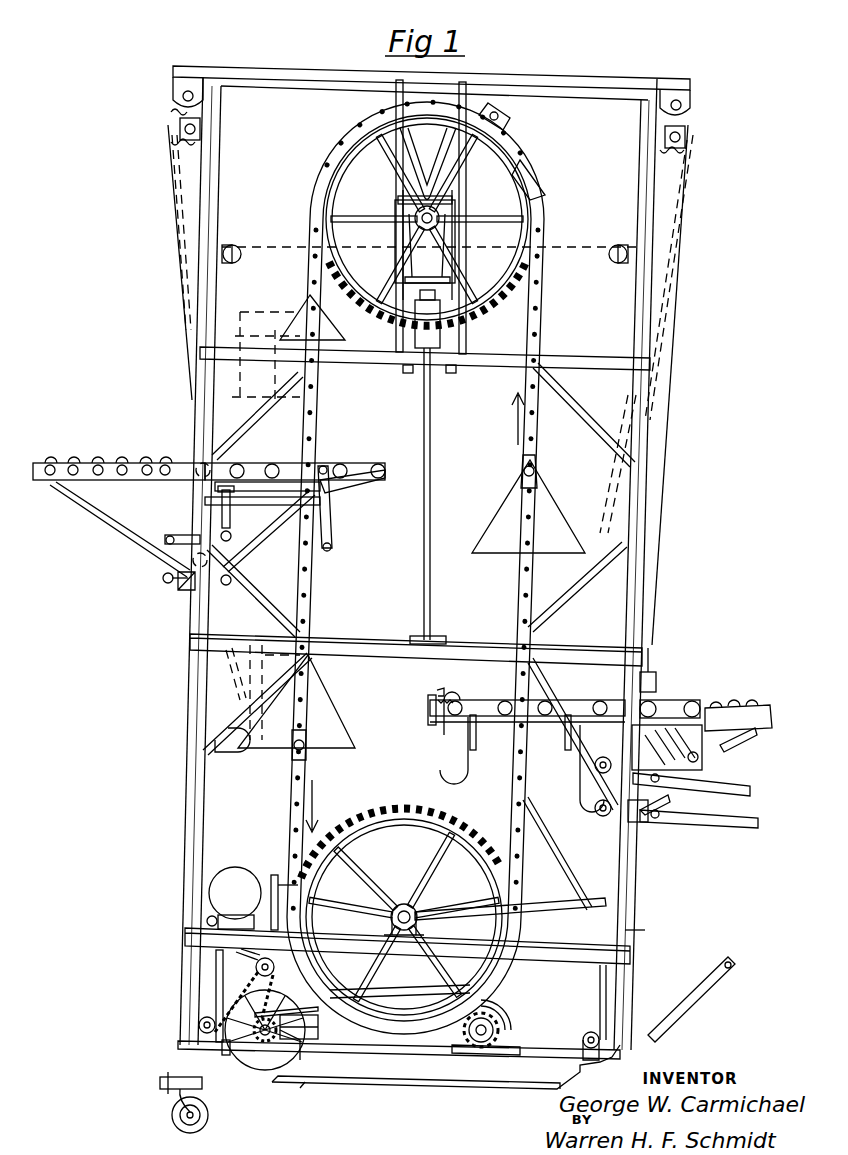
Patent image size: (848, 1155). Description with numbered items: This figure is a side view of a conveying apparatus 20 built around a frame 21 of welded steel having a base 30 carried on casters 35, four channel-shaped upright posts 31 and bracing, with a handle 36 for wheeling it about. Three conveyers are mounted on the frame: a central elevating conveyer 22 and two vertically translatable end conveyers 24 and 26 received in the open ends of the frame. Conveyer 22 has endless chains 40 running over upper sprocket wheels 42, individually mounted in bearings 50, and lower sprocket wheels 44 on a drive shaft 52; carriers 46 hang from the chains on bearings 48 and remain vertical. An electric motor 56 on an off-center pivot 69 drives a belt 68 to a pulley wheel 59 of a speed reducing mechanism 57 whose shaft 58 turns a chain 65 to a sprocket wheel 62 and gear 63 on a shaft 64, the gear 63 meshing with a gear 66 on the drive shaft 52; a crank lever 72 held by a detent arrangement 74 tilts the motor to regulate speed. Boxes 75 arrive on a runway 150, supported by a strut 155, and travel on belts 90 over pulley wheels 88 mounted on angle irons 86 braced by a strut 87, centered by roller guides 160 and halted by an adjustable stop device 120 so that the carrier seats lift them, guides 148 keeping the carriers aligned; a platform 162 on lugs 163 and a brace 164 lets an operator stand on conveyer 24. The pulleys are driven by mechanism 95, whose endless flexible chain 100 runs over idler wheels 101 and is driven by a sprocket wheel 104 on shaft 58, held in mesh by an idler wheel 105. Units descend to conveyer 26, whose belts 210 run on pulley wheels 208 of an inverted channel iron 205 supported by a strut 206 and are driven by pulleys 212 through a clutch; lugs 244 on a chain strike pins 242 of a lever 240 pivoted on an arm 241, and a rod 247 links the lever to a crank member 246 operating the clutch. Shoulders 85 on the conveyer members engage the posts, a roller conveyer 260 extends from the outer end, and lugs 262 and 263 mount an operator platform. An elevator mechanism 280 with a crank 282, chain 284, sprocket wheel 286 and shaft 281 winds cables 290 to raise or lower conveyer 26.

The conveying apparatus 20 is at (330, 1090).
The frame 21 is at (632, 930).
The conveyer 22 is at (531, 172).
The conveyer 24 is at (692, 700).
The conveyer 26 is at (122, 462).
The base 30 is at (465, 1088).
The upright posts 31 is at (640, 400).
The casters 35 is at (172, 1112).
The handle 36 is at (702, 1000).
The endless chains 40 is at (535, 312).
The sprocket wheels 42 is at (337, 150).
The sprocket wheels 44 is at (405, 814).
The carriers 46 is at (338, 395).
The bearings 48 is at (506, 128).
The bearings 50 is at (448, 215).
The drive shaft 52 is at (404, 904).
The electric motor 56 is at (232, 884).
The speed reducing mechanism 57 is at (224, 1056).
The shaft 58 is at (262, 1048).
The pulley wheel 59 is at (302, 1016).
The sprocket wheel 62 is at (503, 1030).
The gear 63 is at (488, 1022).
The shaft 64 is at (495, 1030).
The chain 65 is at (406, 1000).
The gear 66 is at (335, 822).
The belt 68 is at (214, 958).
The off-center pivot 69 is at (207, 920).
The crank lever 72 is at (273, 875).
The detent arrangement 74 is at (608, 905).
The boxes 75 is at (282, 314).
The shoulders 85 is at (188, 590).
The angle irons 86 is at (430, 722).
The strut 87 is at (508, 735).
The pulley wheels 88 is at (504, 703).
The belts 90 is at (460, 702).
The mechanism 95 is at (597, 772).
The endless flexible chain 100 is at (605, 971).
The idler wheels 101 is at (243, 246).
The sprocket wheel 104 is at (282, 1035).
The idler wheel 105 is at (255, 965).
The adjustable stop device 120 is at (434, 692).
The guides 148 is at (443, 762).
The runway 150 is at (750, 712).
The strut 155 is at (748, 738).
The roller guides 160 is at (650, 674).
The platform 162 is at (733, 820).
The lugs 163 is at (666, 796).
The brace 164 is at (750, 788).
The inverted channel iron 205 is at (366, 470).
The strut 206 is at (364, 495).
The pulley wheels 208 is at (380, 468).
The belts 210 is at (250, 462).
The pulleys 212 is at (192, 558).
The lever 240 is at (334, 532).
The arm 241 is at (270, 512).
The pins 242 is at (323, 466).
The lugs 244 is at (521, 172).
The crank member 246 is at (222, 506).
The rod 247 is at (288, 484).
The roller conveyer 260 is at (80, 462).
The lugs 262 is at (164, 540).
The lugs 263 is at (165, 580).
The elevator mechanism 280 is at (178, 115).
The shaft 281 is at (188, 91).
The crank 282 is at (235, 690).
The chain 284 is at (175, 241).
The sprocket wheel 286 is at (172, 128).
The cables 290 is at (190, 297).